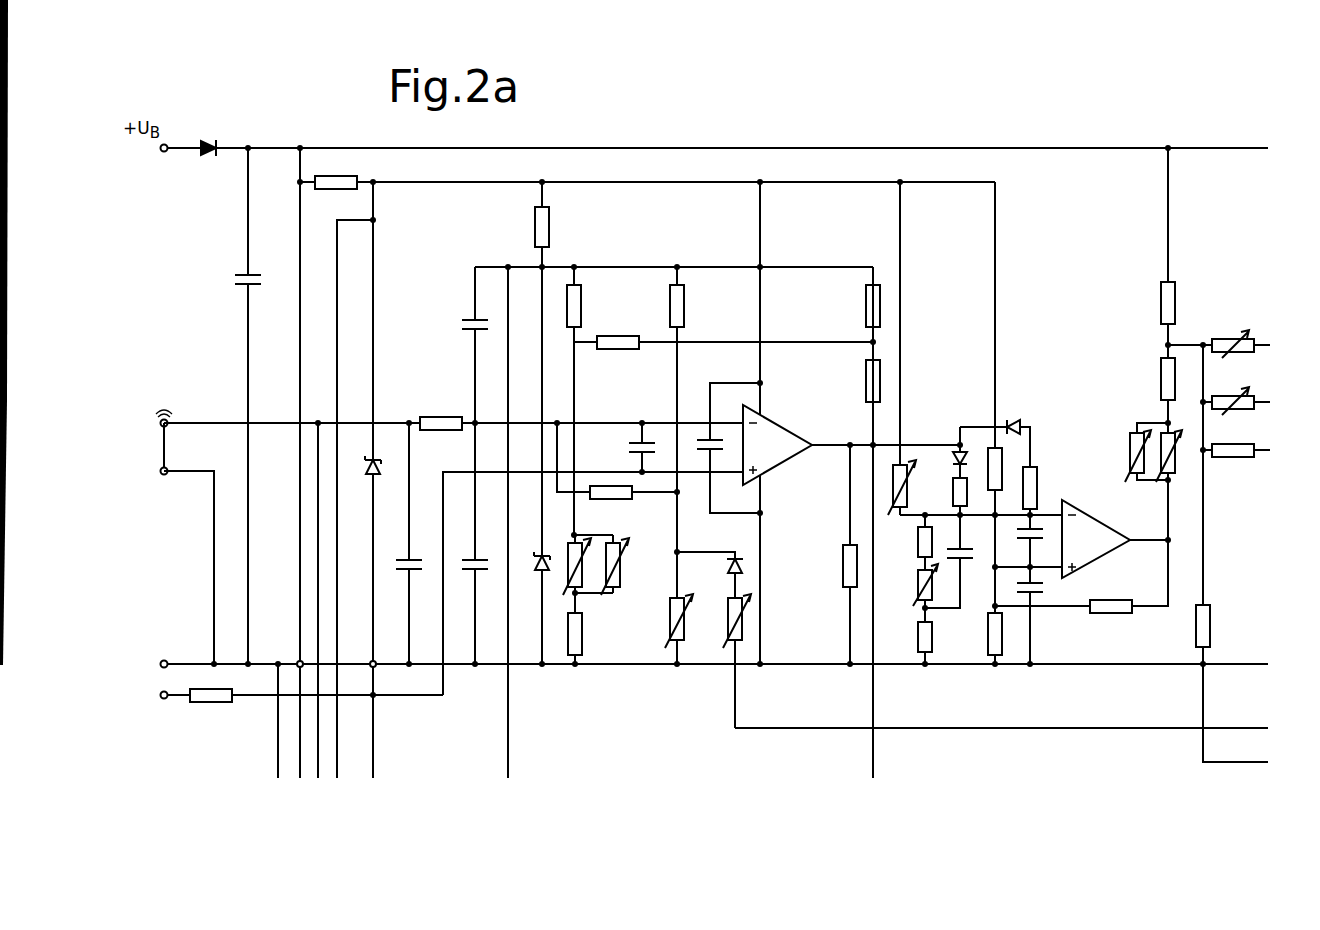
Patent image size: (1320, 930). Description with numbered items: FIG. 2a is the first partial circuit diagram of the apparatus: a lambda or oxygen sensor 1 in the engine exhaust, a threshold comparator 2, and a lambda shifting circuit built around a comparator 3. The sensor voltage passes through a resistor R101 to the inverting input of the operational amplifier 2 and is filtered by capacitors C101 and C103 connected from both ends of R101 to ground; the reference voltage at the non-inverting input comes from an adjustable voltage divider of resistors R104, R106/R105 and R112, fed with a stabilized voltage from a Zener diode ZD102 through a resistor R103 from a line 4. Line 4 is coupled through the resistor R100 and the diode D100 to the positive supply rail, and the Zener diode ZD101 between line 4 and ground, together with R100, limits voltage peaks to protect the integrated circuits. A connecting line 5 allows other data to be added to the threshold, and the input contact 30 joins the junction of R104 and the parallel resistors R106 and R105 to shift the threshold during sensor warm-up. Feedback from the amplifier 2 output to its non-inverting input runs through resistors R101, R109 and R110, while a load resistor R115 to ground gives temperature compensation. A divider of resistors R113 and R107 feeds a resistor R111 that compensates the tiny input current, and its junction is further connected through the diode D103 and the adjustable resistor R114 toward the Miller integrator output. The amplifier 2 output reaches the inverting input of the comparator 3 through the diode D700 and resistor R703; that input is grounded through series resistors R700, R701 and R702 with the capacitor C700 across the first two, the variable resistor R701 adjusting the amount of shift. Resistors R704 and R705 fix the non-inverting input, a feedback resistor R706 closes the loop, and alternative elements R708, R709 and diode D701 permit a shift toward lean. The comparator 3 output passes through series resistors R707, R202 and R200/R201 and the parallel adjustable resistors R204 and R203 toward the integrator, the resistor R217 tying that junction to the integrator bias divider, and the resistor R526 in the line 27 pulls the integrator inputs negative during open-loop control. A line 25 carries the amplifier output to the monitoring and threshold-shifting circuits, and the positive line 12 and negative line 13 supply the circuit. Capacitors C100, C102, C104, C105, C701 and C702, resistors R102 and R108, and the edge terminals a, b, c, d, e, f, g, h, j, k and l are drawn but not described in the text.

The oxygen sensor 1 is at (158, 442).
The threshold comparator 2 is at (778, 455).
The comparator 3 is at (1103, 545).
The line 4 is at (490, 183).
The connecting line 5 is at (443, 700).
The positive line 12 is at (842, 148).
The negative line 13 is at (603, 668).
The line 25 is at (872, 760).
The line 27 is at (1206, 706).
The input contact 30 is at (443, 485).
The diode D100 is at (222, 154).
The capacitor C100 is at (237, 280).
The resistor R100 is at (330, 180).
The resistor R101 is at (436, 427).
The resistor R102 is at (210, 701).
The resistor R103 is at (545, 240).
The resistor R104 is at (578, 318).
The resistor R105 is at (618, 575).
The resistor R106 is at (590, 560).
The resistor R107 is at (670, 618).
The resistor R108 is at (612, 346).
The resistor R109 is at (869, 316).
The resistor R110 is at (867, 380).
The resistor R111 is at (605, 496).
The resistor R112 is at (577, 640).
The resistor R113 is at (681, 318).
The adjustable resistor R114 is at (727, 625).
The load resistor R115 is at (845, 572).
The capacitor C101 is at (394, 568).
The capacitor C102 is at (462, 327).
The capacitor C103 is at (460, 568).
The capacitor C104 is at (630, 446).
The capacitor C105 is at (700, 443).
The Zener diode ZD101 is at (368, 474).
The Zener diode ZD102 is at (538, 548).
The diode D103 is at (733, 565).
The diode D700 is at (955, 455).
The diode D701 is at (1012, 422).
The resistor R700 is at (918, 545).
The variable resistor R701 is at (918, 590).
The resistor R702 is at (918, 640).
The resistor R703 is at (953, 492).
The resistor R704 is at (995, 475).
The resistor R705 is at (988, 628).
The feedback resistor R706 is at (1104, 610).
The resistor R707 is at (1161, 308).
The resistor R708 is at (916, 483).
The resistor R709 is at (1048, 490).
The capacitor C700 is at (948, 552).
The capacitor C701 is at (1017, 532).
The capacitor C702 is at (1046, 590).
The resistor R200 is at (1130, 455).
The resistor R201 is at (1160, 472).
The resistor R202 is at (1161, 378).
The adjustable resistor R203 is at (1222, 405).
The adjustable resistor R204 is at (1215, 350).
The resistor R217 is at (1222, 452).
The resistor R526 is at (1203, 625).
The terminal a is at (1262, 150).
The terminal b is at (1263, 663).
The terminal c is at (1010, 728).
The terminal d is at (1263, 762).
The terminal e is at (275, 735).
The terminal f is at (297, 477).
The terminal g is at (316, 614).
The terminal h is at (351, 513).
The terminal j is at (368, 494).
The terminal k is at (508, 536).
The terminal l is at (870, 536).